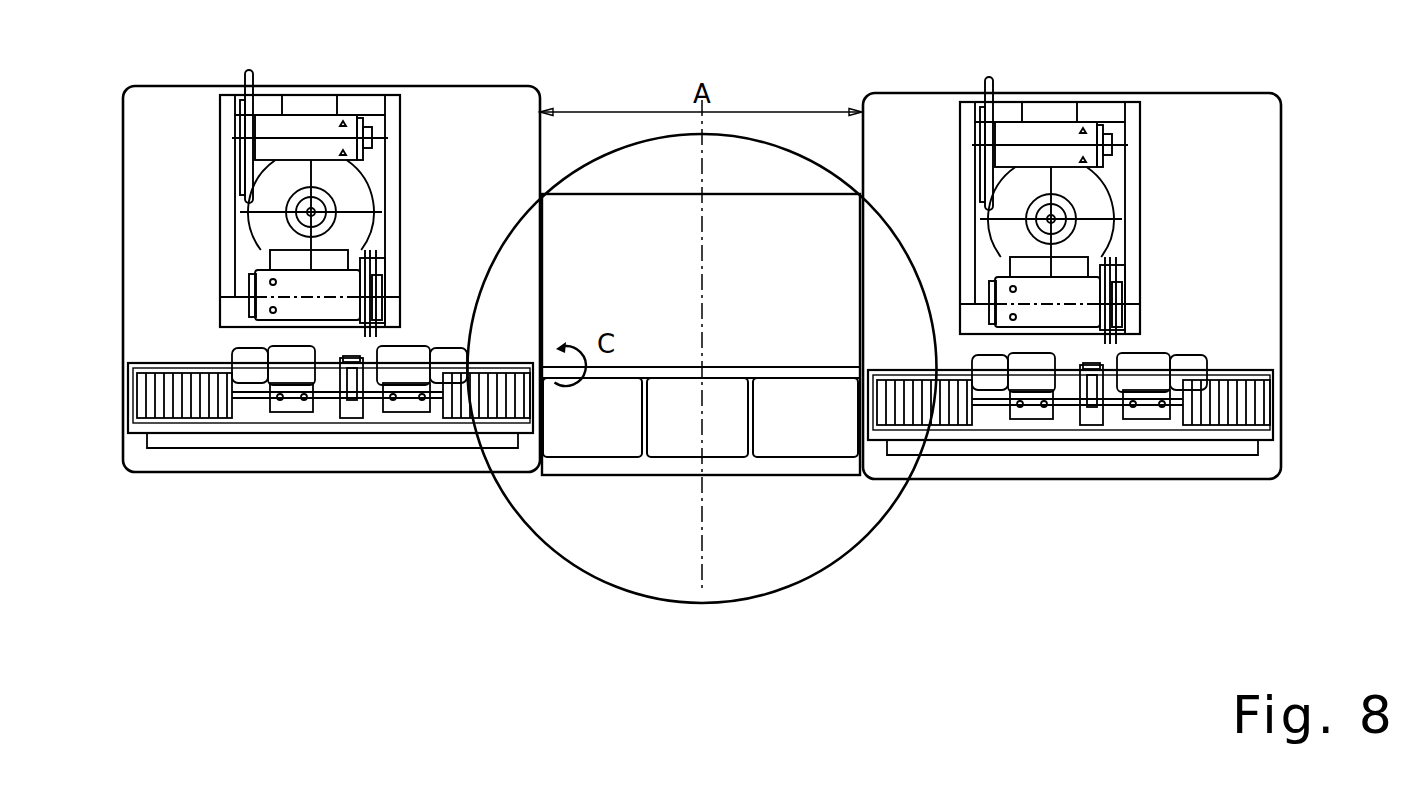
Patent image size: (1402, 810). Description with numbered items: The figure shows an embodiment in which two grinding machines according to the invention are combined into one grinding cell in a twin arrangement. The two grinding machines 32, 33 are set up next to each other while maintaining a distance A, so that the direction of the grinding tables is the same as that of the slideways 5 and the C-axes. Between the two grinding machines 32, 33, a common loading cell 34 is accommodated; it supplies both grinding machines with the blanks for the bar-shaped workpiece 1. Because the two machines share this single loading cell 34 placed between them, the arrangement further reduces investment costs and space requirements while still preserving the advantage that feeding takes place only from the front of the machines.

The bar-shaped workpiece 1 is at (158, 240).
The slideways 5 is at (248, 412).
The grinding machine 32 is at (503, 118).
The grinding machine 33 is at (1242, 127).
The common loading cell 34 is at (748, 487).